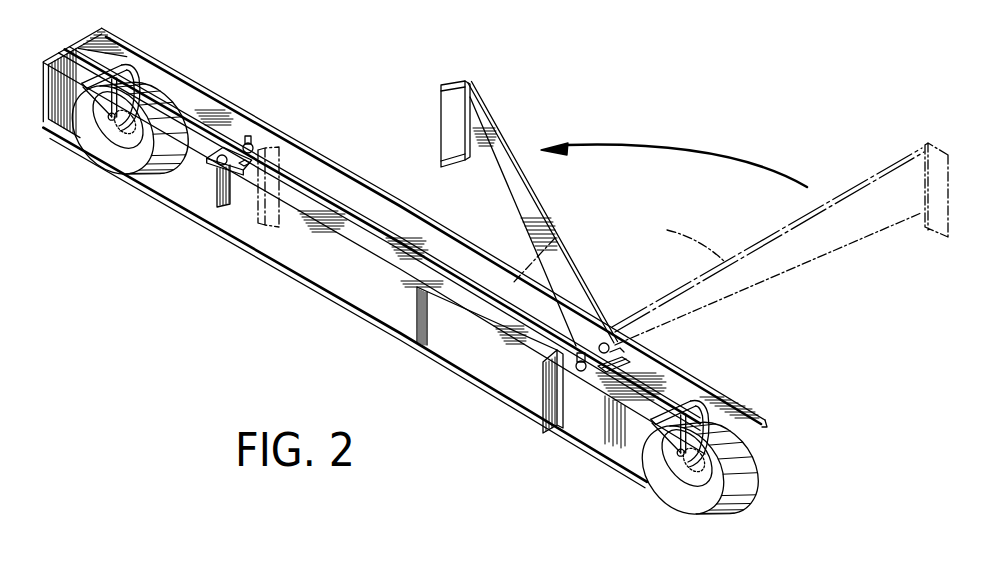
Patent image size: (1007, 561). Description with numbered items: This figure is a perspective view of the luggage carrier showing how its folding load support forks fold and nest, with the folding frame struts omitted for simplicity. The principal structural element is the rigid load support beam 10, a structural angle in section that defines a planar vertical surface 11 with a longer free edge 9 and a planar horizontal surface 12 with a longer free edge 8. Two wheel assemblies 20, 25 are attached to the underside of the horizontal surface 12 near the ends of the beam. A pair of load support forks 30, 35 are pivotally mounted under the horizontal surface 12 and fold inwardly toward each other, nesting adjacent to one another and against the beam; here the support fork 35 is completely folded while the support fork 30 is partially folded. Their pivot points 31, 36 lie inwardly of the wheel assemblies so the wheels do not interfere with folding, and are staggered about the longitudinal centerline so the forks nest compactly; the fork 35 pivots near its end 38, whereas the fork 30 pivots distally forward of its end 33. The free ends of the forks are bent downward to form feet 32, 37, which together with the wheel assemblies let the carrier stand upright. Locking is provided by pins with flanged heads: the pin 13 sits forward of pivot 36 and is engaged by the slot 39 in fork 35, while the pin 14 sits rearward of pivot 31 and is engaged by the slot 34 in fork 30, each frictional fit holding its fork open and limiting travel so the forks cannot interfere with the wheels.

The longer free edge 8 is at (240, 101).
The longer free edge 9 is at (357, 324).
The load support beam 10 is at (401, 350).
The vertical surface 11 is at (337, 284).
The horizontal surface 12 is at (70, 48).
The pin 13 is at (258, 136).
The pin 14 is at (590, 372).
The wheel assembly 20 is at (712, 514).
The wheel assembly 25 is at (125, 183).
The load support fork 30 is at (552, 232).
The pivot point 31 is at (605, 342).
The foot 32 is at (441, 125).
The end 33 is at (630, 368).
The slot 34 is at (623, 360).
The load support fork 35 is at (472, 312).
The pivot point 36 is at (214, 168).
The foot 37 is at (552, 410).
The end 38 is at (222, 150).
The slot 39 is at (243, 170).